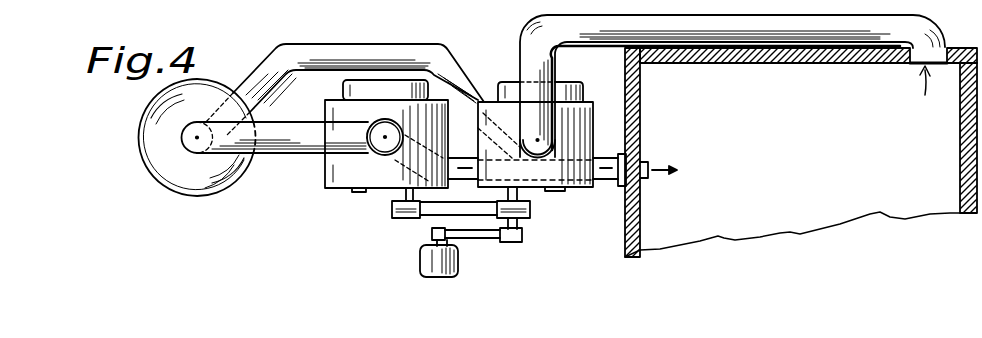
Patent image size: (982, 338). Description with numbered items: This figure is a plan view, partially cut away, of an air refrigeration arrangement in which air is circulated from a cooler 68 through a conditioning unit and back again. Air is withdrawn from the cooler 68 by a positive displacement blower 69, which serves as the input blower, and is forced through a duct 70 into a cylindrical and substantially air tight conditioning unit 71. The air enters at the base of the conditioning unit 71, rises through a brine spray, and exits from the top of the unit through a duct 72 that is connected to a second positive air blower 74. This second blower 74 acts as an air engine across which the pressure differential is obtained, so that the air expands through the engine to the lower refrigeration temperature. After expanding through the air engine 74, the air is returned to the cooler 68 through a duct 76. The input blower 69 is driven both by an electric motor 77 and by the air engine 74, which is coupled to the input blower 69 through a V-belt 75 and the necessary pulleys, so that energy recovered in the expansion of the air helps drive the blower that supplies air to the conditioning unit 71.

The cooler 68 is at (788, 212).
The positive displacement blower 69 is at (567, 92).
The duct 70 is at (318, 42).
The conditioning unit 71 is at (157, 158).
The duct 72 is at (273, 151).
The second positive air blower 74 is at (342, 177).
The V-belt 75 is at (457, 204).
The duct 76 is at (604, 188).
The electric motor 77 is at (420, 256).